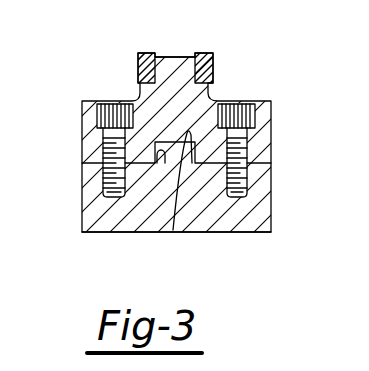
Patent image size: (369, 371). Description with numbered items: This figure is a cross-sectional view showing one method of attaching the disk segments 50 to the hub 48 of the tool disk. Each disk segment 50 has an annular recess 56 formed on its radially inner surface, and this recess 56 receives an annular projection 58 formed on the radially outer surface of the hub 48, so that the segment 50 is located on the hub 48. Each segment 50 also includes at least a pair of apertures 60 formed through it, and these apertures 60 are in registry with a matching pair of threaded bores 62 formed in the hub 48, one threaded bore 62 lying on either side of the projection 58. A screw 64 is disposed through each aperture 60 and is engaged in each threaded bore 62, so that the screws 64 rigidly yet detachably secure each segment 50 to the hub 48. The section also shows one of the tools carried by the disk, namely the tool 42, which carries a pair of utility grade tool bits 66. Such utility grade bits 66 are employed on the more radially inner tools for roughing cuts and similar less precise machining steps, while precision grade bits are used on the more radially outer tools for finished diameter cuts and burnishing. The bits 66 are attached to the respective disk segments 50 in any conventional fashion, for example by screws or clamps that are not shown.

The tool 42 is at (236, 79).
The hub 48 is at (240, 222).
The disk segment 50 is at (274, 130).
The seal 56 is at (160, 152).
The annular projection 58 is at (173, 230).
The aperture 60 is at (103, 146).
The threaded bore 62 is at (93, 205).
The screw 64 is at (113, 101).
The utility grade tool bit 66 is at (205, 53).